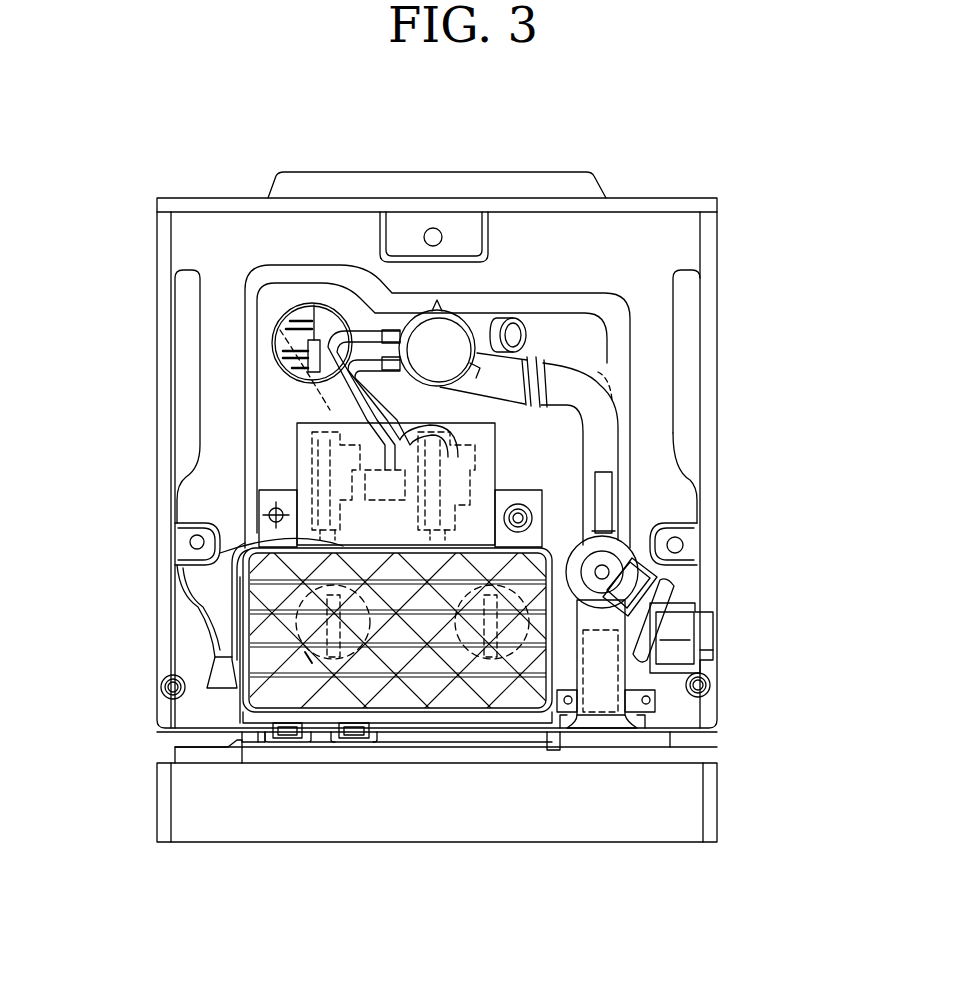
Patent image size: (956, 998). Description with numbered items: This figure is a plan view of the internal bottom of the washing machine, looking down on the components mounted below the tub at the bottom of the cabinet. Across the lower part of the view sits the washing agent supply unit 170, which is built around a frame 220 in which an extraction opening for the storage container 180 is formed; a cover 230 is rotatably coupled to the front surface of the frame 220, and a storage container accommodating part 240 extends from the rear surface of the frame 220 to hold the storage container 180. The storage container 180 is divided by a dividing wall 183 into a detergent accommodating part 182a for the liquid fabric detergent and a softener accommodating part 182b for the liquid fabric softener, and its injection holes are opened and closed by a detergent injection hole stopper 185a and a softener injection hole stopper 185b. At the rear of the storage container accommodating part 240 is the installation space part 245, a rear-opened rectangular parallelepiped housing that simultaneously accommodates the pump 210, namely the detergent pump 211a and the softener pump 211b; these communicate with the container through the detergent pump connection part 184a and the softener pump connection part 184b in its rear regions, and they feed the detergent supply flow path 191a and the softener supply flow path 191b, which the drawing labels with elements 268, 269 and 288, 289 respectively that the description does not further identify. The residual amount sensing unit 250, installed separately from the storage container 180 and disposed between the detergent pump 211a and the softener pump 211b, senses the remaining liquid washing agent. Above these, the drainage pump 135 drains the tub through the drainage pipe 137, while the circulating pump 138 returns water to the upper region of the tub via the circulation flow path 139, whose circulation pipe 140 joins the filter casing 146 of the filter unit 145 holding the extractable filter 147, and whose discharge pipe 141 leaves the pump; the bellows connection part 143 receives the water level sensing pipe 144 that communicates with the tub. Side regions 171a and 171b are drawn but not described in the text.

The drainage pump 135 is at (653, 672).
The drainage pipe 137 is at (667, 612).
The circulating pump 138 is at (637, 573).
The circulation flow path 139 is at (709, 452).
The circulation pipe 140 is at (613, 433).
The discharge pipe 141 is at (613, 487).
The bellows connection part 143 is at (463, 320).
The water level sensing pipe 144 is at (488, 321).
The filter unit 145 is at (613, 767).
The filter casing 146 is at (637, 717).
The filter 147 is at (602, 700).
The washing agent supply unit 170 is at (228, 708).
The left frame panel 171a is at (235, 365).
The right frame panel 171b is at (517, 443).
The storage container 180 is at (412, 759).
The detergent accommodating part 182a is at (400, 717).
The softener accommodating part 182b is at (517, 655).
The dividing wall 183 is at (488, 717).
The detergent pump connection part 184a is at (220, 553).
The softener pump connection part 184b is at (658, 528).
The detergent injection hole stopper 185a is at (307, 657).
The softener injection hole stopper 185b is at (530, 647).
The detergent supply flow path 191a is at (304, 260).
The softener supply flow path 191b is at (393, 279).
The pump 210 is at (258, 486).
The detergent pump 211a is at (313, 482).
The softener pump 211b is at (417, 500).
The frame 220 is at (318, 717).
The cover 230 is at (367, 800).
The storage container accommodating part 240 is at (318, 608).
The installation space part 245 is at (292, 469).
The residual amount sensing unit 250 is at (617, 344).
The first connector terminal 268 is at (343, 433).
The second connector terminal 269 is at (322, 430).
The first pipe 288 is at (402, 328).
The second pipe 289 is at (365, 400).